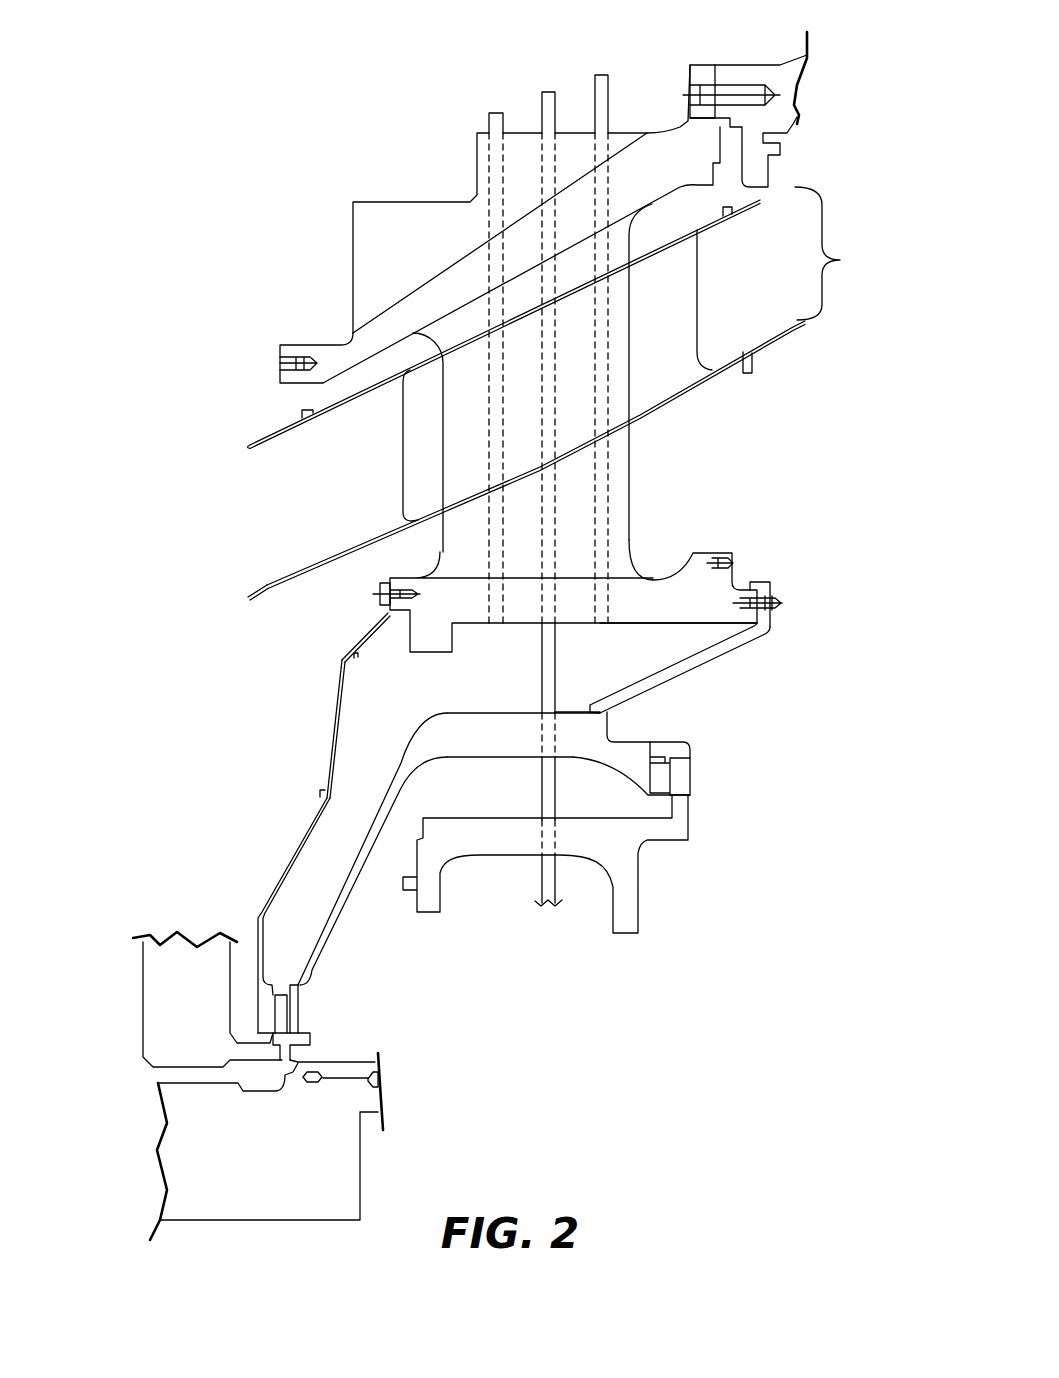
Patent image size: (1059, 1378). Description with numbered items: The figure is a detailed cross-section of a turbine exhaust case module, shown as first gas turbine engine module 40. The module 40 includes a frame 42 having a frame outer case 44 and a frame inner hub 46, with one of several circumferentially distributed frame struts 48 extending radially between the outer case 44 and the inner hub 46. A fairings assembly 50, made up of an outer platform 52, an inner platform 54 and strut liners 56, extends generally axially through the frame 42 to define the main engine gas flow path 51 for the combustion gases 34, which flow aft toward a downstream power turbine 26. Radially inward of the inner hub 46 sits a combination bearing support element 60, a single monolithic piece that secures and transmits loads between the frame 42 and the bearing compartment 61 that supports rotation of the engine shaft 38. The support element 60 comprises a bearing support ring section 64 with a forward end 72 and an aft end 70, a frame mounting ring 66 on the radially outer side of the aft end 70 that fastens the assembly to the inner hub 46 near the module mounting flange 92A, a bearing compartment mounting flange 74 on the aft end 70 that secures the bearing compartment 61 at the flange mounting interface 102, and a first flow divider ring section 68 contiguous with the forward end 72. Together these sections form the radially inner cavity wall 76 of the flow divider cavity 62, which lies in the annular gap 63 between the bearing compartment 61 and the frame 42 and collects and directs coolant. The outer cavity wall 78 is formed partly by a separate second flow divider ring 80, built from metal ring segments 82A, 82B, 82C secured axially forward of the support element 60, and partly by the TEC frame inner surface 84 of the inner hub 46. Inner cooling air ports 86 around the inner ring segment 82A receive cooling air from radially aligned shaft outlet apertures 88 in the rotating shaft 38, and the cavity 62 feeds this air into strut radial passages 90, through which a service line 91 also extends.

The power turbine 26 is at (780, 70).
The combustion gases 34 is at (764, 276).
The engine shaft 38 is at (135, 1084).
The first gas turbine engine module 40 is at (283, 168).
The frame 42 is at (460, 190).
The frame outer case 44 is at (343, 332).
The frame inner hub 46 is at (497, 625).
The frame strut 48 is at (645, 487).
The fairings assembly 50 is at (350, 566).
The main engine gas flow path 51 is at (842, 259).
The outer platform 52 is at (295, 424).
The inner platform 54 is at (313, 557).
The liners 56 is at (403, 462).
The combination bearing support element 60 is at (540, 813).
The bearing compartment 61 is at (721, 786).
The flow divider cavity 62 is at (608, 669).
The annular gap 63 is at (626, 732).
The bearing support ring section 64 is at (478, 745).
The frame mounting ring 66 is at (772, 635).
The first flow divider ring section 68 is at (312, 971).
The bearing support ring section aft end 70 is at (587, 748).
The bearing support ring section forward end 72 is at (445, 741).
The bearing compartment mounting flange 74 is at (637, 793).
The radially inner cavity wall 76 is at (562, 712).
The outer cavity wall 78 is at (531, 640).
The second flow divider ring 80 is at (298, 820).
The metal ring segment 82A is at (262, 903).
The metal ring segment 82B is at (330, 720).
The metal ring segment 82C is at (377, 617).
The TEC frame inner surface 84 is at (652, 625).
The inner cooling air ports 86 is at (282, 988).
The shaft outlet apertures 88 is at (310, 1056).
The strut radial passages 90 is at (610, 328).
The service line 91 is at (540, 697).
The module mounting flange 92A is at (690, 74).
The bearing compartment flange mounting interface 102 is at (668, 748).